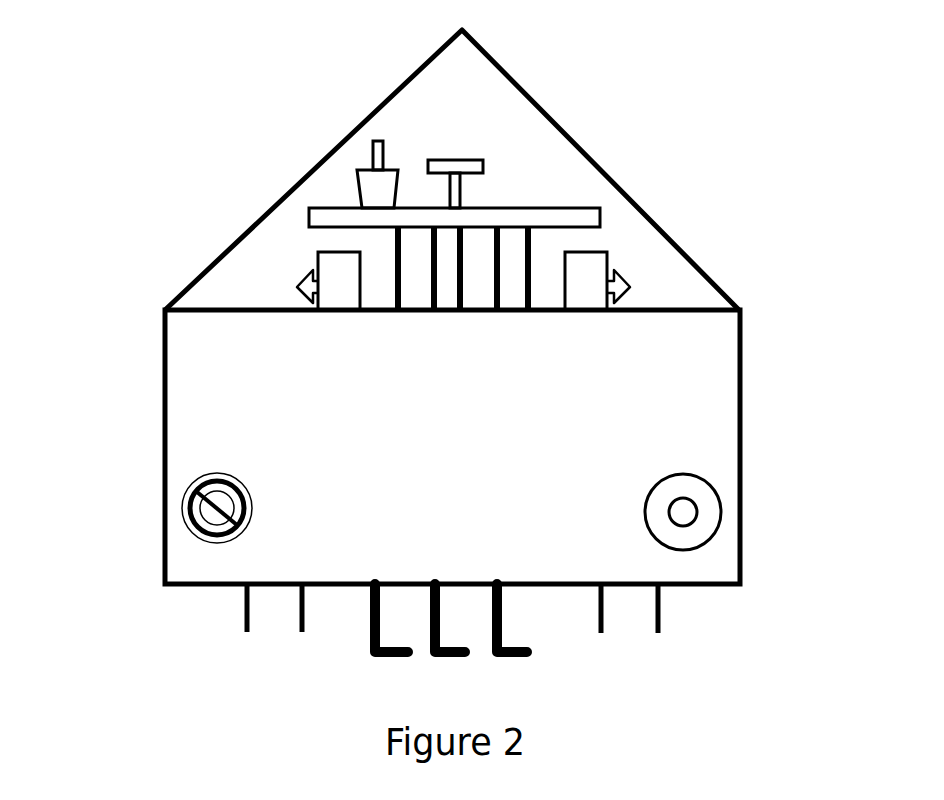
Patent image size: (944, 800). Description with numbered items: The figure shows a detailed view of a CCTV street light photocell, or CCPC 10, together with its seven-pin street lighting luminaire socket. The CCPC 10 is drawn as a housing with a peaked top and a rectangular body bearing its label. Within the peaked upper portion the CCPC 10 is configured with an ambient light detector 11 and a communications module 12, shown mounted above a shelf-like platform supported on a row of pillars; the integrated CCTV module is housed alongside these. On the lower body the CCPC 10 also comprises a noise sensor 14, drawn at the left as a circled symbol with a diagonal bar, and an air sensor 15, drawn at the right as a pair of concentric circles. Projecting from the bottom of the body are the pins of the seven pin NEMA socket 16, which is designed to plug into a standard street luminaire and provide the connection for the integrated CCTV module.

The CCTV street light photocell 10 is at (695, 198).
The ambient light detector 11 is at (465, 158).
The communications module 12 is at (367, 183).
The noise sensor 14 is at (203, 507).
The air sensor 15 is at (695, 518).
The seven pin NEMA socket 16 is at (250, 645).